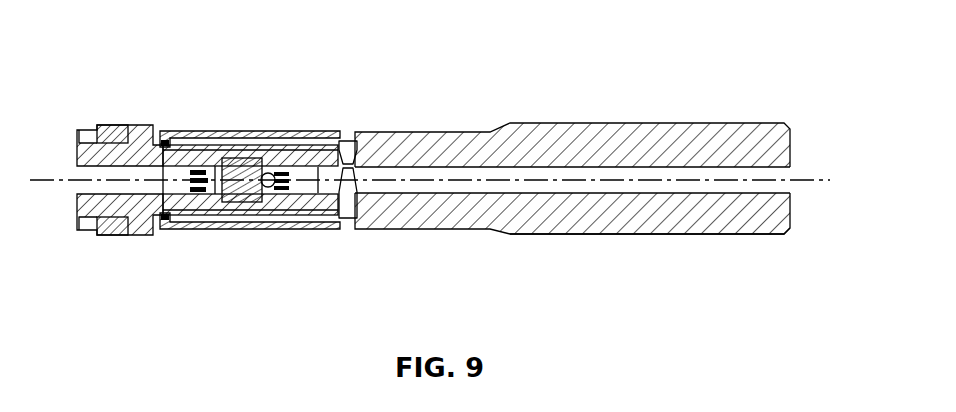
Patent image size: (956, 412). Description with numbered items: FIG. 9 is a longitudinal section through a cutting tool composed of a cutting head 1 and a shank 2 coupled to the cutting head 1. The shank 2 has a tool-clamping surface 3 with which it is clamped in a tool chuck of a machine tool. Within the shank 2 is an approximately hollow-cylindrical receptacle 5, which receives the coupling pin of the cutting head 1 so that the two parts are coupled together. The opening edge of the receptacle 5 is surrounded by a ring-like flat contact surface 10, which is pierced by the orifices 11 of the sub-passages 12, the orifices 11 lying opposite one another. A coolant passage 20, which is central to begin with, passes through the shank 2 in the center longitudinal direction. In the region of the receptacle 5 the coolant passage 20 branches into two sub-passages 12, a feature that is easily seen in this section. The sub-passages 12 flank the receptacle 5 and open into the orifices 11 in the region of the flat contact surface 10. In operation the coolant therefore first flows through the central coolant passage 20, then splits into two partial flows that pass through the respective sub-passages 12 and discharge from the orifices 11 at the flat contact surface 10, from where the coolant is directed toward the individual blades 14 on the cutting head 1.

The cutting head 1 is at (141, 126).
The shank 2 is at (452, 128).
The tool-clamping surface 3 is at (638, 236).
The receptacle 5 is at (240, 158).
The flat contact surface 10 is at (175, 140).
The orifices 11 is at (184, 146).
The sub-passages 12 is at (308, 131).
The blades 14 is at (107, 125).
The coolant passage 20 is at (600, 167).